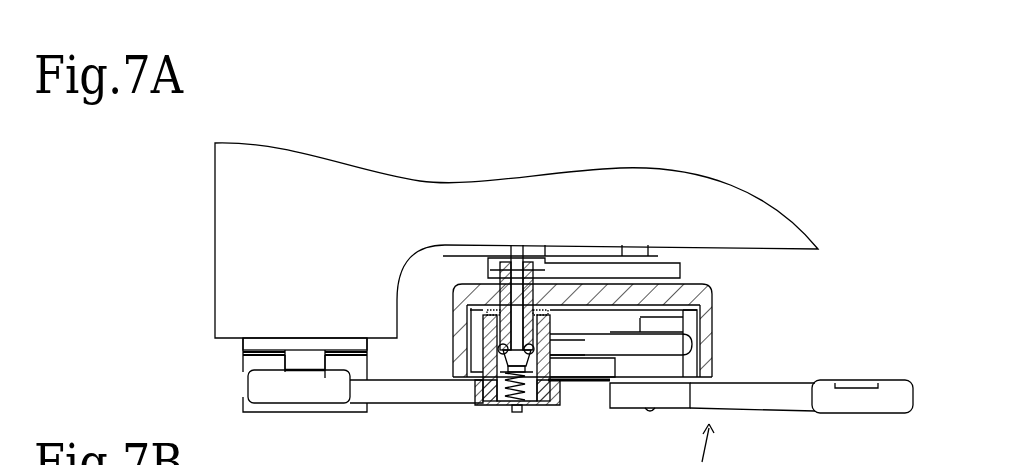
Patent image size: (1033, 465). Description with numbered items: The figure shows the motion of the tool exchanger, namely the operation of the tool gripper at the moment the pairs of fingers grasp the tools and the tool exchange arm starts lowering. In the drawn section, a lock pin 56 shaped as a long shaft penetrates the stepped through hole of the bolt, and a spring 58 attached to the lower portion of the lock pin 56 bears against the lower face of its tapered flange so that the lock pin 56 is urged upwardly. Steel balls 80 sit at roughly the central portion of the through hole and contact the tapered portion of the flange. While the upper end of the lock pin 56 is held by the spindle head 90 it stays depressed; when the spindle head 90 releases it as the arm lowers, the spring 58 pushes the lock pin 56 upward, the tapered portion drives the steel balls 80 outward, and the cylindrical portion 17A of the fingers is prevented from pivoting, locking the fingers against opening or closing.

The cylindrical portion 17A is at (475, 410).
The lock pin 56 is at (517, 245).
The spring 58 is at (532, 412).
The steel ball 80 is at (547, 352).
The spindle head 90 is at (783, 252).